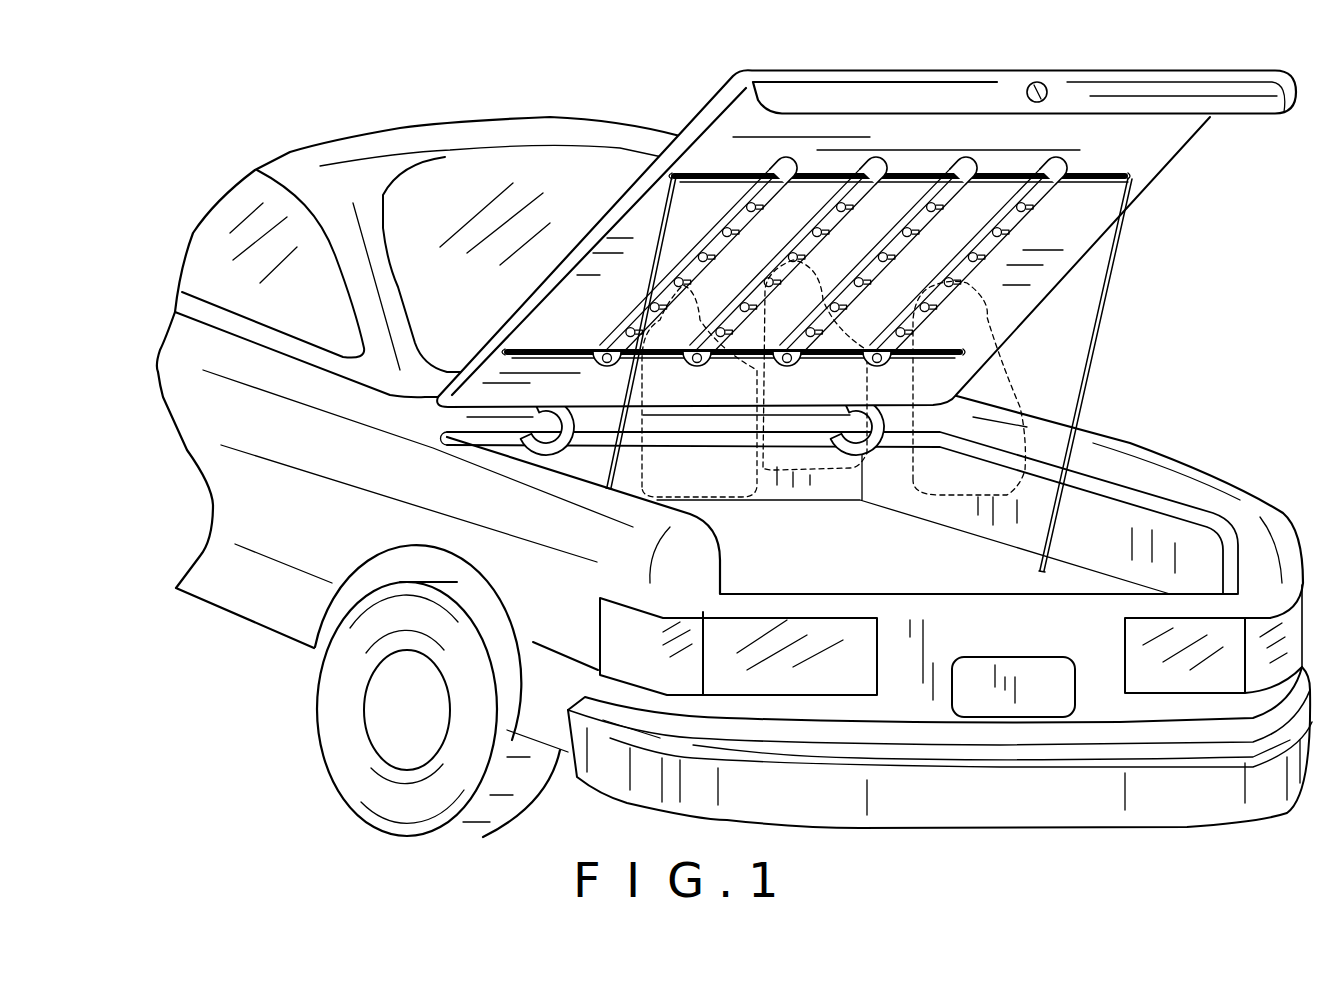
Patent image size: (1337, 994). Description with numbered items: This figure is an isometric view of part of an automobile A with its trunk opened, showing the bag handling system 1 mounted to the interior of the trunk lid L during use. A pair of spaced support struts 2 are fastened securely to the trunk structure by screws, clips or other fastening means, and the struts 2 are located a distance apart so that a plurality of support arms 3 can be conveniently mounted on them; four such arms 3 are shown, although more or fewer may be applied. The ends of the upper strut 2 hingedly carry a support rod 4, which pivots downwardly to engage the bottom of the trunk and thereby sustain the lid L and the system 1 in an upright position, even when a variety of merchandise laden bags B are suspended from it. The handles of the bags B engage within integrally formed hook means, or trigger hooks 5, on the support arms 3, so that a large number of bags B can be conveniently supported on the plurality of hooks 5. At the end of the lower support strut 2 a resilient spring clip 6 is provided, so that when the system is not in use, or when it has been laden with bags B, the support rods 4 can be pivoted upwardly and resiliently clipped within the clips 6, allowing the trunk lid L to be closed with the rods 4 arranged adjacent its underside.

The bag handling system 1 is at (876, 361).
The support struts 2 is at (1088, 176).
The support arms 3 is at (728, 250).
The support rod 4 is at (1095, 330).
The trigger hooks 5 is at (730, 232).
The spring clips 6 is at (503, 352).
The automobile A is at (341, 124).
The bags B is at (713, 480).
The trunk lid L is at (905, 72).